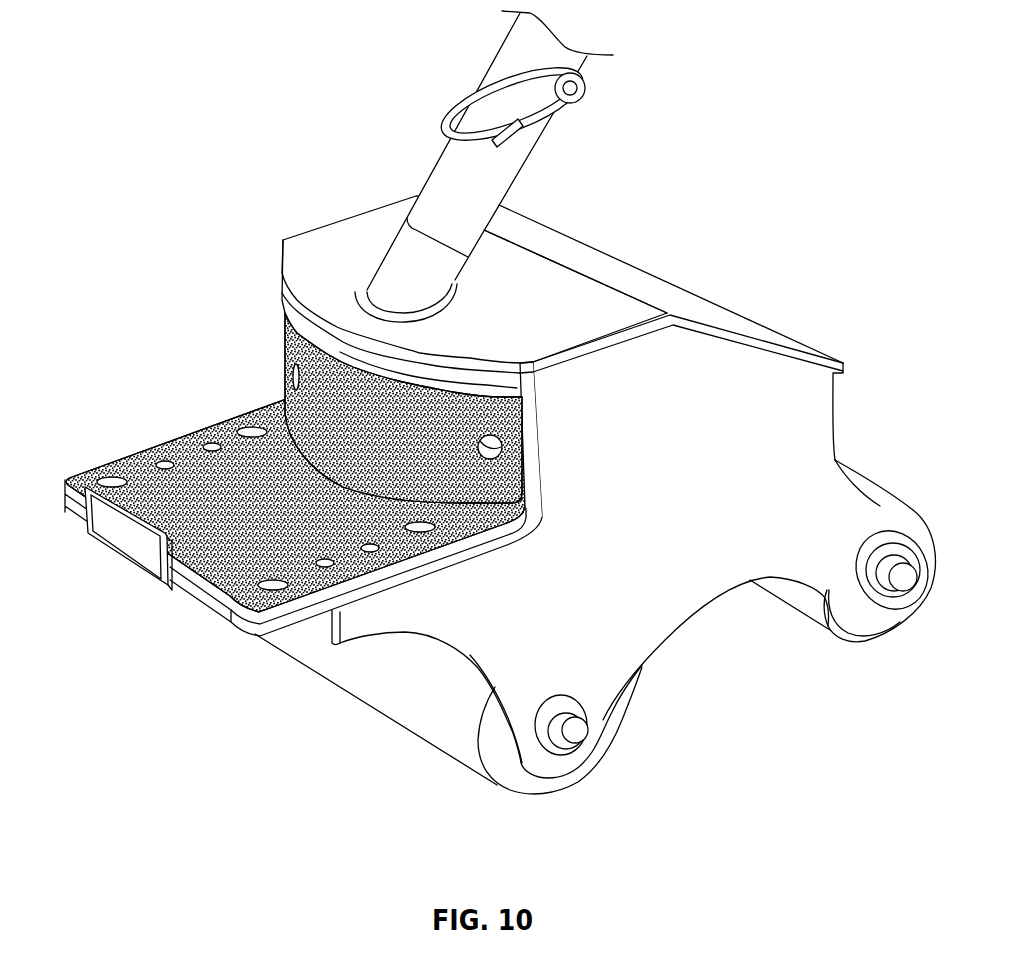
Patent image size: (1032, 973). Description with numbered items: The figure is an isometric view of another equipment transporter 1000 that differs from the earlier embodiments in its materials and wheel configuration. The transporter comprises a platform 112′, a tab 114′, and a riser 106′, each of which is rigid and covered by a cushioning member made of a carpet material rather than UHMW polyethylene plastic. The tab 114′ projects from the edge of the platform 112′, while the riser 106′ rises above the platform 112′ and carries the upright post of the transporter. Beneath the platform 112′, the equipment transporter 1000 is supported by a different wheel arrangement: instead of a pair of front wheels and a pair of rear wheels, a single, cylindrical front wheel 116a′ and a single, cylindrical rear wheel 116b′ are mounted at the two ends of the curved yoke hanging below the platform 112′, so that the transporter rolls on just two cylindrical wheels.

The equipment transporter 1000 is at (479, 402).
The riser 106′ is at (250, 300).
The platform 112′ is at (149, 419).
The tab 114′ is at (114, 569).
The front wheel 116a′ is at (337, 726).
The rear wheel 116b′ is at (814, 644).